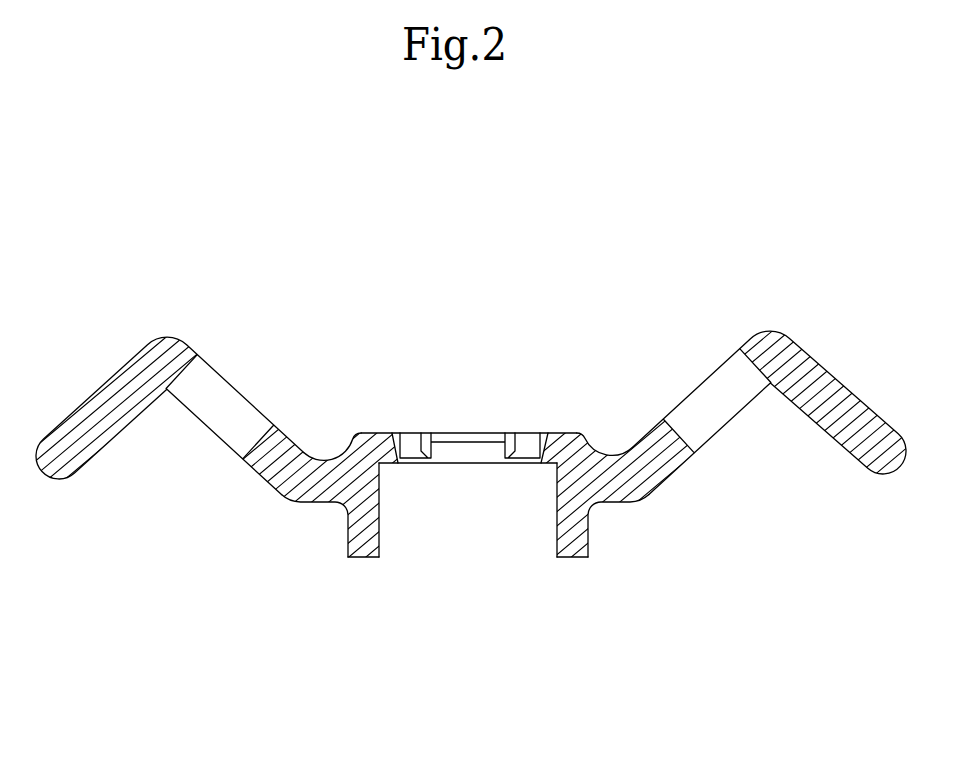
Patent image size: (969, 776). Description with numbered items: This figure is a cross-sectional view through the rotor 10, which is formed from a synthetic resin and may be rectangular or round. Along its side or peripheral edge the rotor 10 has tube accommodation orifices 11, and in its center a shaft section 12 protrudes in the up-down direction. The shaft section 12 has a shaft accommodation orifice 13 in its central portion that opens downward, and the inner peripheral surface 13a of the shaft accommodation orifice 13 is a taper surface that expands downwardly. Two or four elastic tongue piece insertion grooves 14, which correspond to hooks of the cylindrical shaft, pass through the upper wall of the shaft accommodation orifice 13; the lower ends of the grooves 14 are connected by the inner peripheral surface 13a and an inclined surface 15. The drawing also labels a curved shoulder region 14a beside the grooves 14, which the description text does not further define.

The rotor 10 is at (358, 392).
The tube accommodation orifice 11 is at (221, 393).
The shaft section 12 is at (362, 510).
The shaft accommodation orifice 13 is at (502, 532).
The inner peripheral surface 13a is at (381, 522).
The elastic tongue piece insertion groove 14 is at (408, 438).
The curved shoulder portion 14a is at (388, 430).
The inclined surface 15 is at (400, 463).